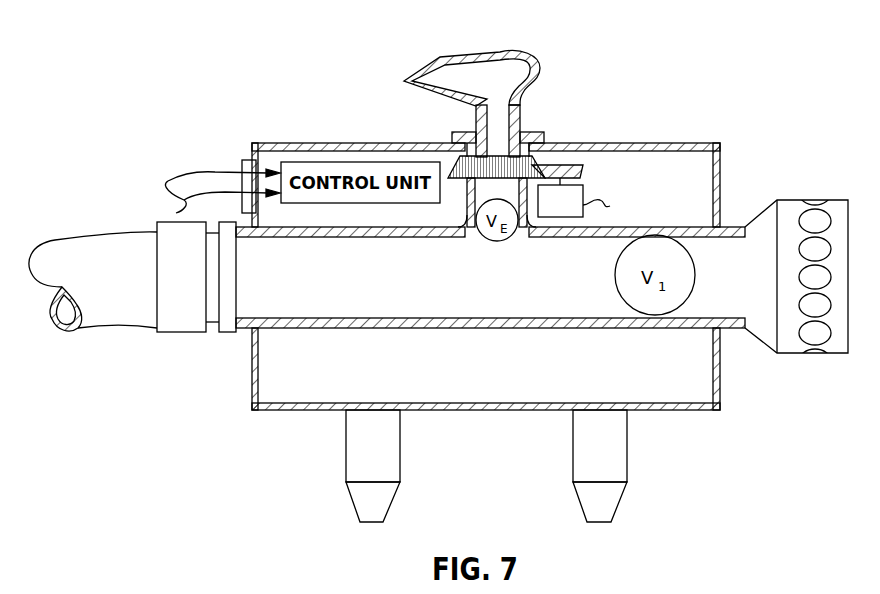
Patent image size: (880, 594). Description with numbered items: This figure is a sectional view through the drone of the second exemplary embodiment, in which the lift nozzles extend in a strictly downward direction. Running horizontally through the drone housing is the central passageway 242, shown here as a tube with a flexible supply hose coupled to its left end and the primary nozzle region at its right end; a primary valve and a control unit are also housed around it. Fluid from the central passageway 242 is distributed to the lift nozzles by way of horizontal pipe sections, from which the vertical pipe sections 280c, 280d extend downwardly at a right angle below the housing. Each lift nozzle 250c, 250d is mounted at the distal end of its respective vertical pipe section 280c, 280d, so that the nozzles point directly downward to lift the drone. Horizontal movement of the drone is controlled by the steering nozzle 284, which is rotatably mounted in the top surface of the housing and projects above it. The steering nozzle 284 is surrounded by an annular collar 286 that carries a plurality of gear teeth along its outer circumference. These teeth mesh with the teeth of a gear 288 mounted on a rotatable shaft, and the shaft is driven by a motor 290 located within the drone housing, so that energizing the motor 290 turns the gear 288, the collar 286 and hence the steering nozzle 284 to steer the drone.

The central passageway 242 is at (363, 286).
The steering nozzle 284 is at (518, 54).
The annular collar 286 is at (457, 167).
The gear 288 is at (572, 166).
The motor 290 is at (588, 184).
The vertical pipe section 280c is at (346, 443).
The vertical pipe section 280d is at (627, 443).
The lift nozzle 250c is at (350, 497).
The lift nozzle 250d is at (622, 497).